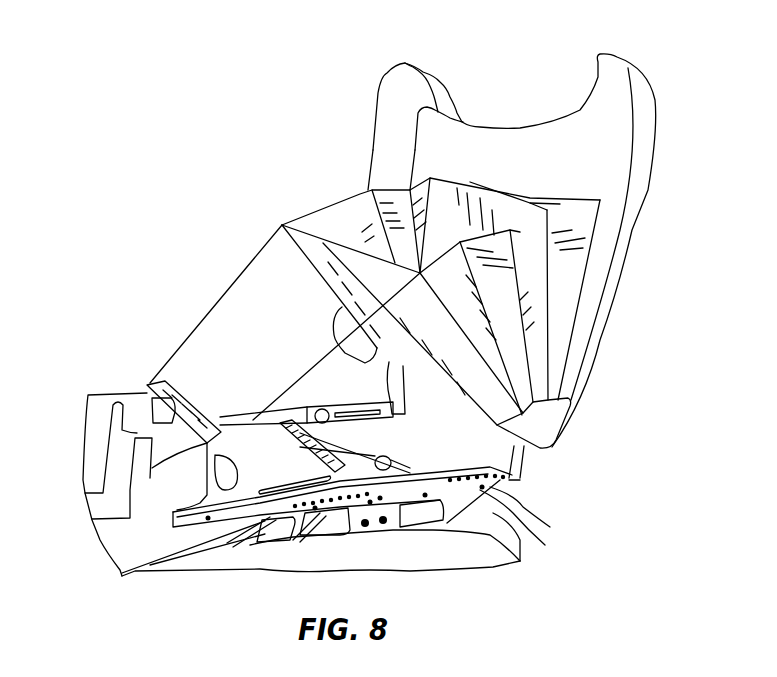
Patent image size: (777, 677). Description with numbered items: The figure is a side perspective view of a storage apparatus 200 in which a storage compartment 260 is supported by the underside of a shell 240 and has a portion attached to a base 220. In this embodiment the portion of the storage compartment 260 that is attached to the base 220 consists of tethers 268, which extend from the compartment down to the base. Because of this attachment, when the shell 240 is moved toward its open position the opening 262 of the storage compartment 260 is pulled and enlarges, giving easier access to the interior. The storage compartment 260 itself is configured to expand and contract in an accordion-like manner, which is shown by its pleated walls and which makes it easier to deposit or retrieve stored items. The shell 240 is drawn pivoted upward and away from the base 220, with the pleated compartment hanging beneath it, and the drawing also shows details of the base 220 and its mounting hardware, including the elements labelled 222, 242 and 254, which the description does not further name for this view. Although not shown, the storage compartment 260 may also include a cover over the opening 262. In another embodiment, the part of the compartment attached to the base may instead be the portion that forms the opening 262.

The storage apparatus 200 is at (128, 60).
The base 220 is at (490, 513).
The pivot stem 222 is at (398, 413).
The shell 240 is at (650, 122).
The seat back panel 242 is at (593, 262).
The hinge bracket 254 is at (387, 396).
The storage compartment 260 is at (252, 222).
The opening 262 is at (357, 215).
The tethers 268 is at (297, 383).